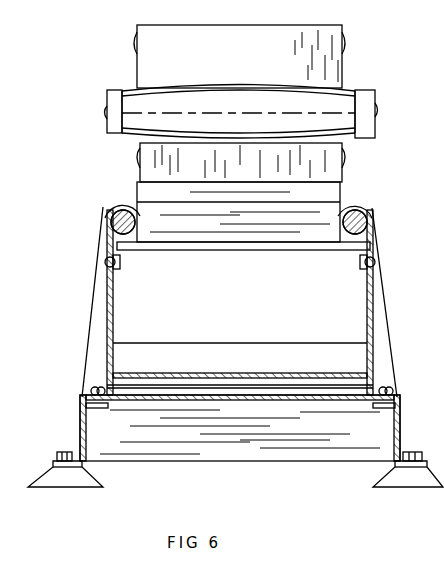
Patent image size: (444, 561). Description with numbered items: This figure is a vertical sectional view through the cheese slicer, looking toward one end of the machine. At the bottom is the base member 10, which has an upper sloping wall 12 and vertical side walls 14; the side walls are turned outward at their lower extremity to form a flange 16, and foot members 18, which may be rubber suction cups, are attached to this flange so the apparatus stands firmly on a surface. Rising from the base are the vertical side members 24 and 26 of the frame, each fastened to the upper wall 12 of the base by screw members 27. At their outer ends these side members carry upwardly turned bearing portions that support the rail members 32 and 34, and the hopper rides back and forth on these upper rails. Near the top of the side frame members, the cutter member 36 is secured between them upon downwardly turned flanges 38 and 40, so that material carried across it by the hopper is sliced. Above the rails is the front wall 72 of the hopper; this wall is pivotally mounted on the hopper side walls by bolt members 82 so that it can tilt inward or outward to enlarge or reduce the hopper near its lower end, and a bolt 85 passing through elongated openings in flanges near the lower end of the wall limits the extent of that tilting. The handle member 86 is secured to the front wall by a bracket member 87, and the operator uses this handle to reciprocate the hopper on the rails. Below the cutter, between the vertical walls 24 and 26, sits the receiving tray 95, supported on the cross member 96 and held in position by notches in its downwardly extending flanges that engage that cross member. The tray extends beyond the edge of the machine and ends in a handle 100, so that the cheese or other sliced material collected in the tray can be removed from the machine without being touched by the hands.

The base member 10 is at (238, 462).
The upper sloping wall 12 is at (313, 400).
The vertical side walls 14 is at (82, 427).
The flange 16 is at (56, 459).
The foot members 18 is at (60, 486).
The vertical side member 24 is at (370, 314).
The vertical side member 26 is at (105, 312).
The screw members 27 is at (94, 393).
The rail member 32 is at (369, 211).
The rail member 34 is at (108, 205).
The cutter member 36 is at (248, 246).
The downwardly turned flange 38 is at (106, 260).
The downwardly turned flange 40 is at (367, 270).
The front wall 72 is at (248, 41).
The bolt members 82 is at (136, 35).
The bolt 85 is at (132, 150).
The handle member 86 is at (138, 88).
The bracket member 87 is at (104, 114).
The receiving tray 95 is at (306, 372).
The cross member 96 is at (147, 382).
The handle 100 is at (226, 354).